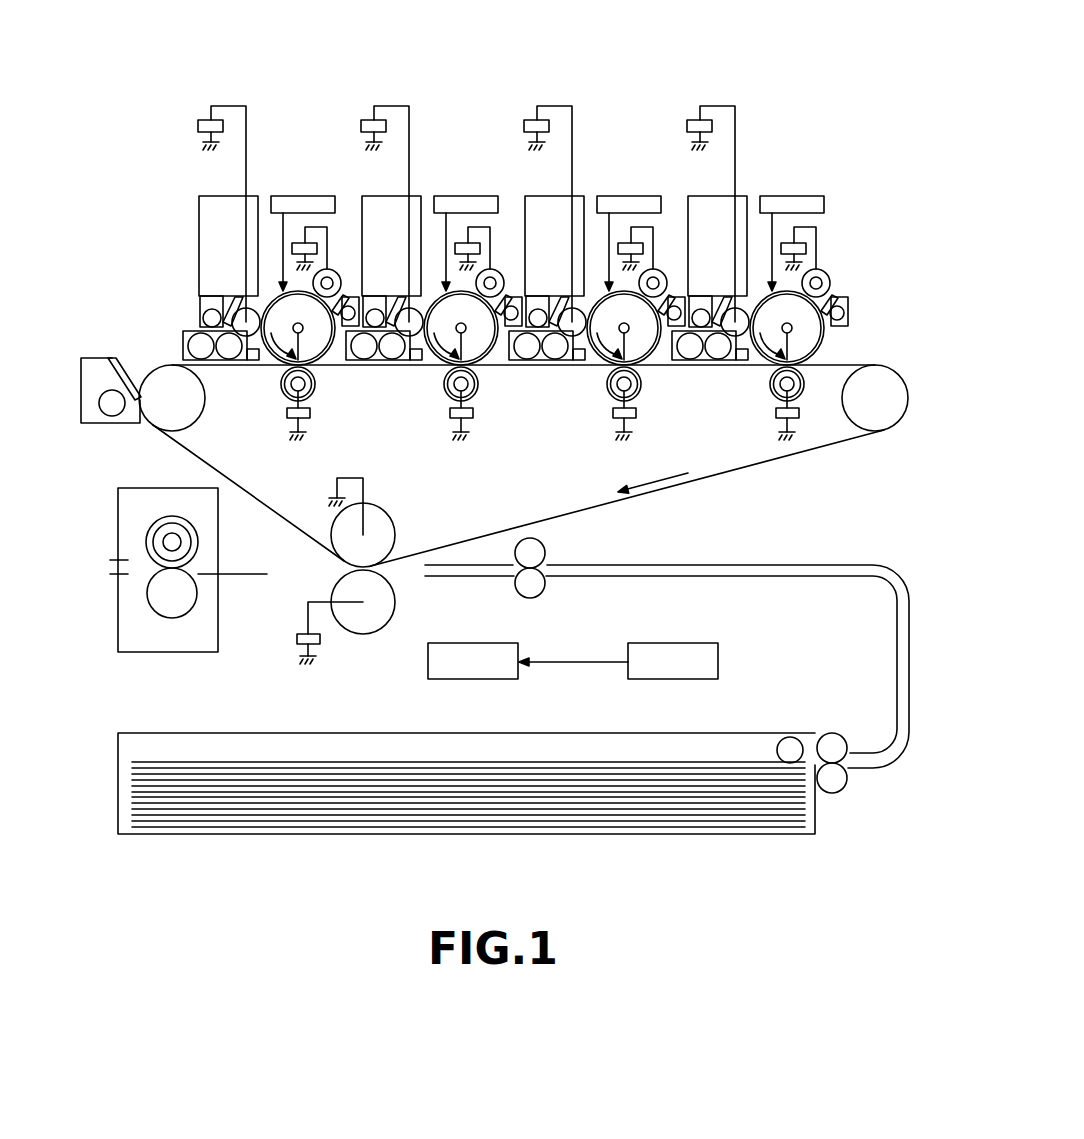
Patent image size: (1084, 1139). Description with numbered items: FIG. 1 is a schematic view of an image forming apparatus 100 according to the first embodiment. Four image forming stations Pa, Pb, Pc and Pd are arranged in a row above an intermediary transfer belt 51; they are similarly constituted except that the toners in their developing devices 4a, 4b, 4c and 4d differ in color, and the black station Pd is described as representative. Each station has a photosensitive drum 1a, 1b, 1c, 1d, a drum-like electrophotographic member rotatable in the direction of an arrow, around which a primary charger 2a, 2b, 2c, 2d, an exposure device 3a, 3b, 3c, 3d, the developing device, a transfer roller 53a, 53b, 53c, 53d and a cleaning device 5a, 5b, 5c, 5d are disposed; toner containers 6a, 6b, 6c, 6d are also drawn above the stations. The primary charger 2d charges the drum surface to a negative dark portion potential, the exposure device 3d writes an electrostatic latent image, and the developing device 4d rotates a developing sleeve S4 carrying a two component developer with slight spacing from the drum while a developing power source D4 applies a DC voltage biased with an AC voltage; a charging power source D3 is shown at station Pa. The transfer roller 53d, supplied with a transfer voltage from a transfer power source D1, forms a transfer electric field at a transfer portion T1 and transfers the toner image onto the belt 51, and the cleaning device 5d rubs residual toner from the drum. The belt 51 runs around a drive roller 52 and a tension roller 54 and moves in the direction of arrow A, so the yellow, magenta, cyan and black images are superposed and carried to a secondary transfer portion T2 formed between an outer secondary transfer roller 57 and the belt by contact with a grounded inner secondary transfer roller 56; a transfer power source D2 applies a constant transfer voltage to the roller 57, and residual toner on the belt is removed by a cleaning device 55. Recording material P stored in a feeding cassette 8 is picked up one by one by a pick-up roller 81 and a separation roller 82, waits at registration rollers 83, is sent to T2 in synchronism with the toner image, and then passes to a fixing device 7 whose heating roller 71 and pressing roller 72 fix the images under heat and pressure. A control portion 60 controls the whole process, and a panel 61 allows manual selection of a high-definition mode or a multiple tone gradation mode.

The image forming apparatus 100 is at (556, 23).
The image forming station Pa is at (272, 128).
The image forming station Pb is at (434, 261).
The image forming station Pc is at (597, 261).
The image forming station Pd is at (760, 262).
The photosensitive drum 1a is at (274, 362).
The photosensitive drum 1b is at (456, 344).
The photosensitive drum 1c is at (619, 344).
The photosensitive drum 1d is at (782, 344).
The primary charger 2a is at (326, 262).
The primary charger 2b is at (488, 262).
The primary charger 2c is at (650, 262).
The primary charger 2d is at (814, 262).
The exposure device 3a is at (293, 197).
The exposure device 3b is at (466, 226).
The exposure device 3c is at (629, 226).
The exposure device 3d is at (792, 226).
The developing device 4a is at (213, 361).
The developing device 4b is at (384, 347).
The developing device 4c is at (547, 347).
The developing device 4d is at (710, 347).
The cleaning device 5a is at (342, 327).
The cleaning device 5b is at (501, 346).
The cleaning device 5c is at (664, 346).
The cleaning device 5d is at (827, 346).
The toner container 6a is at (213, 197).
The toner container 6b is at (389, 244).
The toner container 6c is at (552, 244).
The toner container 6d is at (715, 244).
The transfer roller 53a is at (282, 392).
The transfer roller 53b is at (436, 403).
The transfer roller 53c is at (599, 403).
The transfer roller 53d is at (762, 404).
The developing sleeve S4 is at (467, 280).
The transfer portion T1 is at (554, 341).
The secondary transfer portion T2 is at (357, 571).
The transfer power source D1 is at (771, 425).
The transfer power source D2 is at (297, 640).
The charging power supply D3 is at (318, 248).
The developing power source D4 is at (198, 126).
The intermediary transfer belt 51 is at (252, 496).
The driving roller 52 is at (196, 414).
The tension roller 54 is at (846, 417).
The cleaning device 55 is at (95, 360).
The inner secondary transfer roller 56 is at (396, 535).
The outer secondary transfer roller 57 is at (342, 617).
The fixing device 7 is at (188, 570).
The heating roller 71 is at (153, 526).
The pressing roller 72 is at (168, 617).
The feeding cassette 8 is at (372, 733).
The recording material P is at (598, 762).
The pick-up roller 81 is at (790, 737).
The separation roller 82 is at (831, 733).
The registration rollers 83 is at (545, 592).
The control portion 60 is at (473, 643).
The panel 61 is at (695, 643).
The belt rotation direction A is at (653, 473).